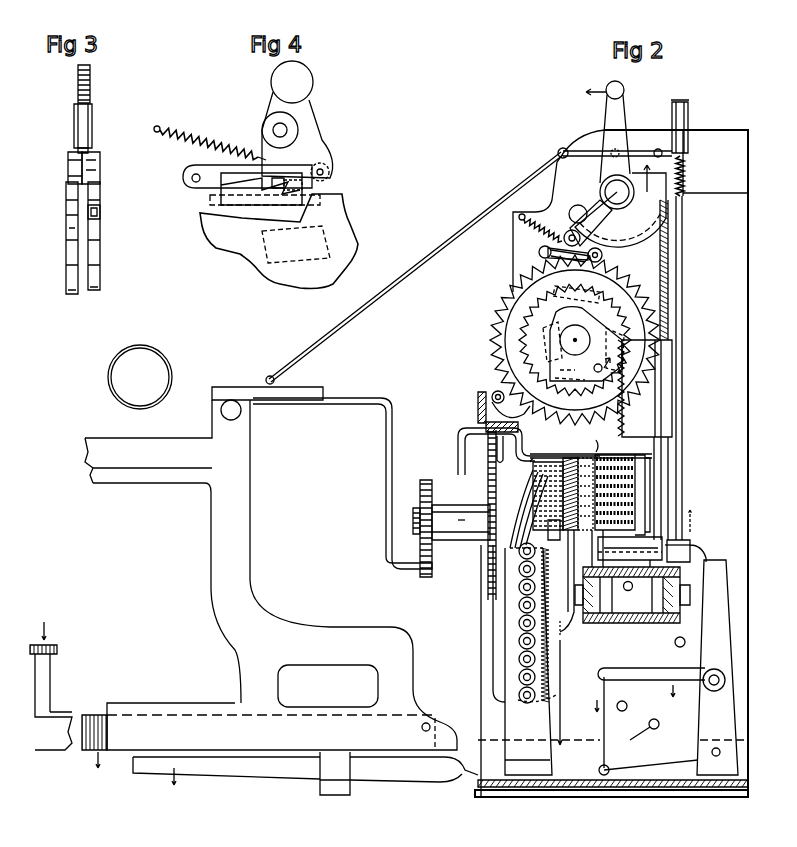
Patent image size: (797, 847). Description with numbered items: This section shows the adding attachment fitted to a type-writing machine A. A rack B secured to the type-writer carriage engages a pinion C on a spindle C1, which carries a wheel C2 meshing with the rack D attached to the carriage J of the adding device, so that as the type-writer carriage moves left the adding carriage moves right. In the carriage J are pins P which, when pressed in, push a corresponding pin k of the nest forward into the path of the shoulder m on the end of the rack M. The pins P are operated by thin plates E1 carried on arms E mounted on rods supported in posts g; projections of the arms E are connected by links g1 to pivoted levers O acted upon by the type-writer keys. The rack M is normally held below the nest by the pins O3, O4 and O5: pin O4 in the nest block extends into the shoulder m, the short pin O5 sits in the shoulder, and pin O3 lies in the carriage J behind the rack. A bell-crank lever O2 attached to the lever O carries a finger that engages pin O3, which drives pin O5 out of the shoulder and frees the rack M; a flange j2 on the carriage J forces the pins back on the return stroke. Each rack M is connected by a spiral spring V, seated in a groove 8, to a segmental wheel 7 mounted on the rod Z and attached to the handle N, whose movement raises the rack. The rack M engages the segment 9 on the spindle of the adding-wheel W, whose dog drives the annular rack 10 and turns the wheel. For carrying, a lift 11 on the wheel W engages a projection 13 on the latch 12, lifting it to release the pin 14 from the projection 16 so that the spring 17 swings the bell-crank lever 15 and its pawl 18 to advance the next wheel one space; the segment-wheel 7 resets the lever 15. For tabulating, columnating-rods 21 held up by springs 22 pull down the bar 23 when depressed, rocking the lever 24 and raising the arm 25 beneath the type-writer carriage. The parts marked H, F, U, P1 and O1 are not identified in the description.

In FIG. 2, the handle N is at (608, 114).
In FIG. 2, the columnating-rods 21 is at (688, 113).
In FIG. 2, the lever 24 is at (640, 157).
In FIG. 2, the bar 23 is at (665, 153).
In FIG. 2, the springs 22 is at (686, 174).
In FIG. 2, the rod Z is at (606, 190).
In FIG. 4, the spring 17 is at (202, 140).
In FIG. 2, the spring 17 is at (546, 225).
In FIG. 2, the groove 8 is at (682, 212).
In FIG. 2, the segmental wheel 7 is at (642, 230).
In FIG. 3, the bell-crank lever 15 is at (90, 90).
In FIG. 4, the bell-crank lever 15 is at (302, 95).
In FIG. 2, the bell-crank lever 15 is at (568, 216).
In FIG. 2, the arm 25 is at (450, 250).
In FIG. 4, the projection 16 is at (278, 176).
In FIG. 2, the projection 16 is at (552, 252).
In FIG. 3, the pawl 18 is at (68, 172).
In FIG. 4, the pawl 18 is at (327, 168).
In FIG. 2, the pawl 18 is at (603, 255).
In FIG. 3, the latch 12 is at (92, 174).
In FIG. 4, the latch 12 is at (192, 188).
In FIG. 2, the latch 12 is at (545, 258).
In FIG. 3, the projection 13 is at (100, 213).
In FIG. 4, the projection 13 is at (268, 214).
In FIG. 2, the projection 13 is at (620, 292).
In FIG. 2, the spiral spring V is at (668, 258).
In FIG. 4, the pin 14 is at (290, 178).
In FIG. 2, the pin 14 is at (535, 262).
In FIG. 3, the adding-wheel W is at (66, 271).
In FIG. 4, the adding-wheel W is at (250, 258).
In FIG. 2, the adding-wheel W is at (612, 280).
In FIG. 2, the annular rack 10 is at (620, 318).
In FIG. 3, the lift 11 is at (100, 246).
In FIG. 4, the lift 11 is at (292, 256).
In FIG. 2, the lift 11 is at (582, 373).
In FIG. 2, the segment 9 is at (586, 344).
In FIG. 2, the rack M is at (650, 392).
In FIG. 2, the rack D is at (465, 438).
In FIG. 2, the pinion C is at (420, 496).
In FIG. 2, the spindle C1 is at (441, 545).
In FIG. 2, the wheel C2 is at (497, 450).
In FIG. 2, the rack B is at (428, 571).
In FIG. 2, the arm E is at (533, 494).
In FIG. 2, the plate E1 is at (533, 466).
In FIG. 2, the pin P is at (568, 458).
In FIG. 2, the pin k is at (640, 465).
In FIG. 2, the bracket U is at (648, 478).
In FIG. 2, the carriage J is at (638, 462).
In FIG. 2, the flange j2 is at (592, 441).
In FIG. 2, the pin P1 is at (556, 526).
In FIG. 2, the link g1 is at (552, 660).
In FIG. 2, the post g is at (505, 727).
In FIG. 2, the pin O4 is at (622, 565).
In FIG. 2, the short pin O5 is at (648, 572).
In FIG. 2, the shoulder m is at (656, 545).
In FIG. 2, the pin O3 is at (694, 560).
In FIG. 2, the bell-crank lever O2 is at (712, 650).
In FIG. 2, the pin O1 is at (608, 708).
In FIG. 2, the lever O is at (646, 720).
In FIG. 2, the type-writing machine A is at (278, 632).
In FIG. 2, the stop H is at (90, 712).
In FIG. 2, the housing F is at (505, 650).